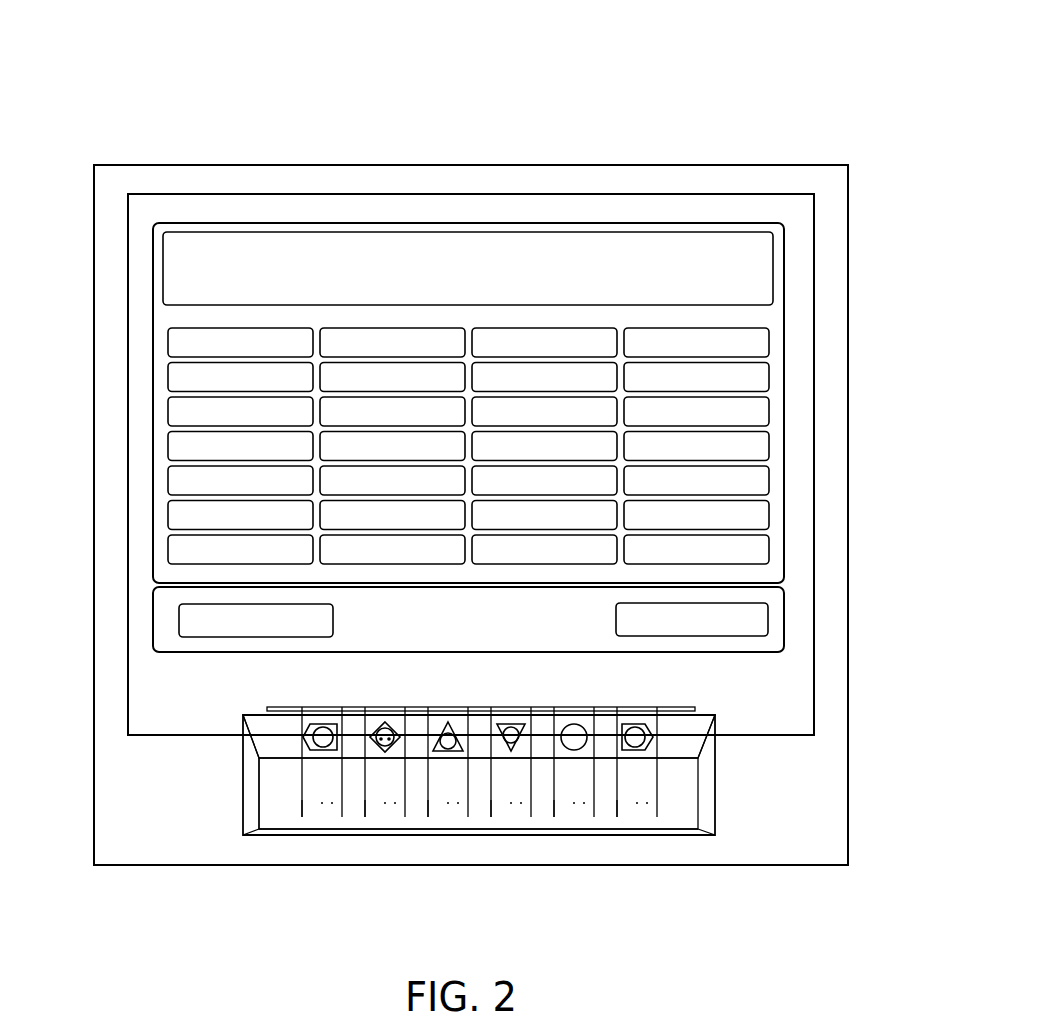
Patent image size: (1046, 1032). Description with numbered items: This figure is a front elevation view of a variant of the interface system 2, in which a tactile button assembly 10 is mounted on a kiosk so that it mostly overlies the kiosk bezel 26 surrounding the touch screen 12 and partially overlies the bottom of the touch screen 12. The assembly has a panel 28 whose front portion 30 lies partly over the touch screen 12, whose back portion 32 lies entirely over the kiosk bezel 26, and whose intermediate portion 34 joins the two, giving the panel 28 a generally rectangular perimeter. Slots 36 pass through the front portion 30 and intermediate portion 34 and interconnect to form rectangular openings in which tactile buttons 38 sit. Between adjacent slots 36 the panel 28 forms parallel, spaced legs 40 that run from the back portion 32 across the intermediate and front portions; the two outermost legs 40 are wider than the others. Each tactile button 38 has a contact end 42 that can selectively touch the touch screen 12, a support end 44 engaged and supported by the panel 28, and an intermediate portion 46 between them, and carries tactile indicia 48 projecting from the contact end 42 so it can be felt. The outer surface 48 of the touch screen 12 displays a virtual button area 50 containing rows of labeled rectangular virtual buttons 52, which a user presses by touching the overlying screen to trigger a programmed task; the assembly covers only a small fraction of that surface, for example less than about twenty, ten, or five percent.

The ticket vending system 2 is at (456, 459).
The tactile button assembly 10 is at (236, 799).
The touch screen 12 is at (131, 247).
The kiosk bezel 26 is at (121, 858).
The panel 28 is at (277, 818).
The front portion 30 is at (686, 737).
The back portion 32 is at (681, 812).
The intermediate portion 34 is at (681, 786).
The slots 36 is at (302, 814).
The tactile buttons 38 is at (334, 706).
The legs 40 is at (265, 722).
The contact end 42 is at (317, 709).
The support end 44 is at (331, 803).
The intermediate portion 46 is at (321, 803).
The tactile indicia 48 is at (800, 548).
The virtual button area 50 is at (773, 317).
The virtual buttons 52 is at (337, 327).